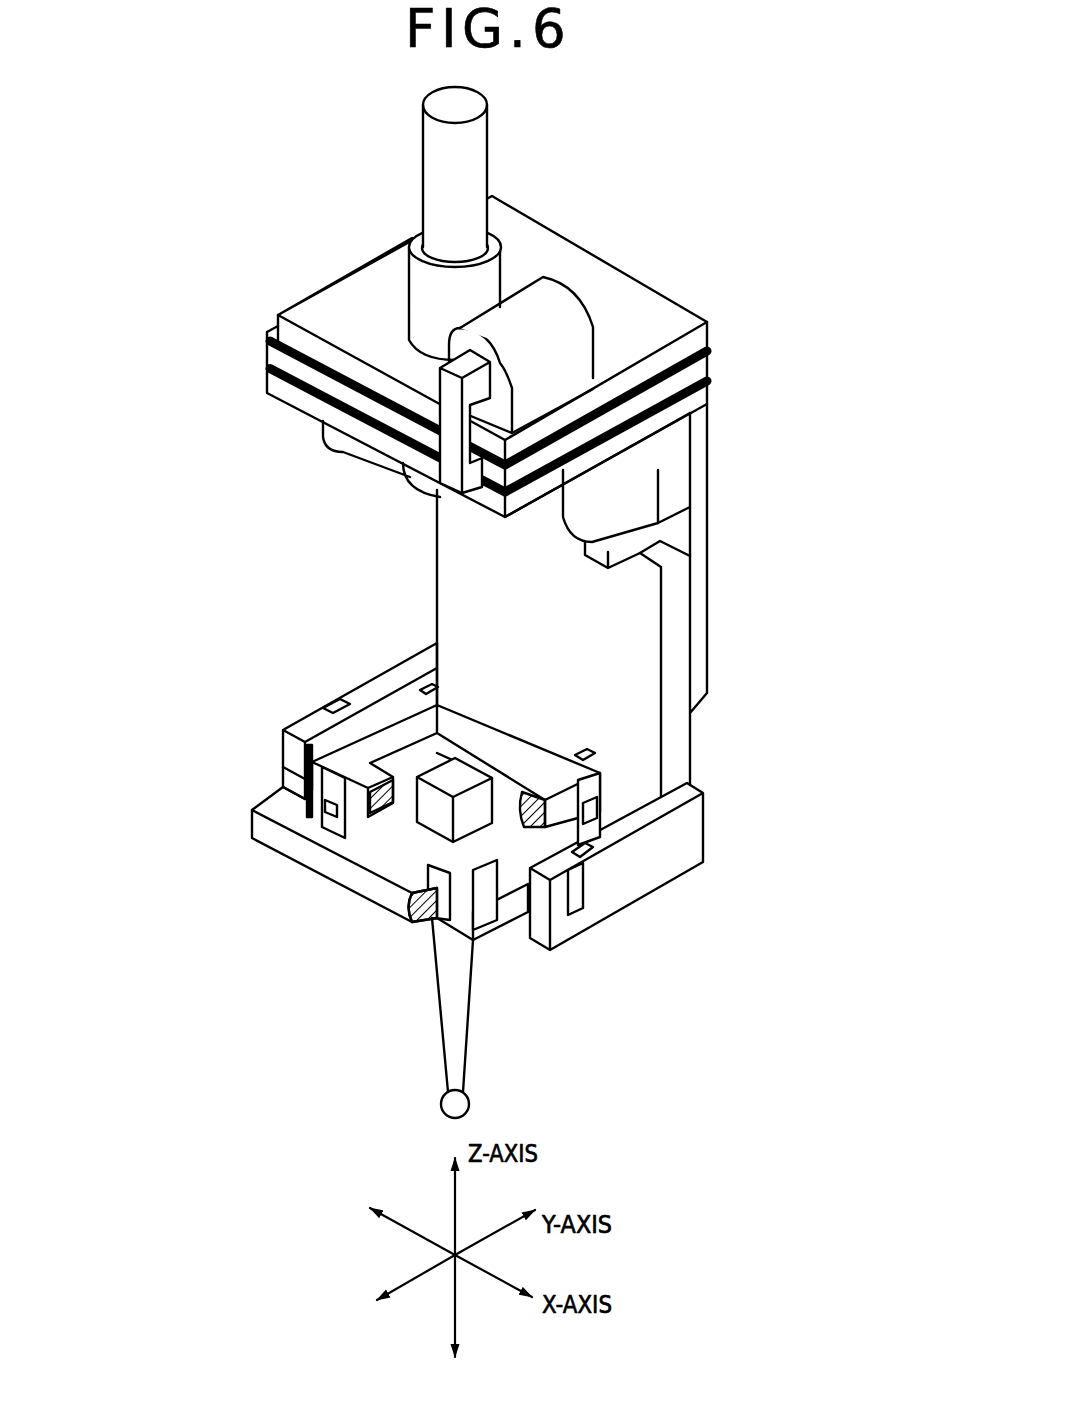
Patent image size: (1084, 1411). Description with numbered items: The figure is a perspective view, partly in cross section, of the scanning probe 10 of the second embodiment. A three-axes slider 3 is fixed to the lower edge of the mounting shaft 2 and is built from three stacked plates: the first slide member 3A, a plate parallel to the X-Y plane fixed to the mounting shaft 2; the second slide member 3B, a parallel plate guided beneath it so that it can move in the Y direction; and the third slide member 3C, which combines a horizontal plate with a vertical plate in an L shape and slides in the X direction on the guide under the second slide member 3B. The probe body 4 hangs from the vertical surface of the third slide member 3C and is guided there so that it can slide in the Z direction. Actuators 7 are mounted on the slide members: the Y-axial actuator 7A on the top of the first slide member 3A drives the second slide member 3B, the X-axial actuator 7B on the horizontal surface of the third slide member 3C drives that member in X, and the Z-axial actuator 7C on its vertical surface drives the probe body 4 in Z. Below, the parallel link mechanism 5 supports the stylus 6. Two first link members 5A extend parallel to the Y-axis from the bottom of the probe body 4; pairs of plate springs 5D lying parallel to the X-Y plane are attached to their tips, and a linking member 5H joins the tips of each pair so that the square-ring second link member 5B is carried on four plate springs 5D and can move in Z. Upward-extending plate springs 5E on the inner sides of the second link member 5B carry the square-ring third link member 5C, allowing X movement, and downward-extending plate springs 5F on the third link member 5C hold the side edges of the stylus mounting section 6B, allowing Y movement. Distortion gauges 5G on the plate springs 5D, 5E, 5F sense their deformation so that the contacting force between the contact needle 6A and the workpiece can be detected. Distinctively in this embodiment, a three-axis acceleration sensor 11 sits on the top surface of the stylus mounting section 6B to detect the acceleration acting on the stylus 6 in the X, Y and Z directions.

The mounting shaft 2 is at (470, 148).
The three-axes slider 3 is at (556, 490).
The first slide member 3A is at (672, 316).
The second slide member 3B is at (697, 372).
The third slide member 3C is at (534, 555).
The probe body 4 is at (675, 734).
The parallel link mechanism 5 is at (474, 813).
The first link member 5A is at (373, 685).
The second link member 5B is at (277, 843).
The third link member 5C is at (548, 743).
The plate spring 5D is at (303, 727).
The plate spring 5E is at (427, 685).
The plate spring 5F is at (328, 788).
The distortion gauge 5G is at (337, 710).
The linking member 5H is at (292, 775).
The stylus 6 is at (359, 980).
The contact needle 6A is at (447, 1065).
The stylus mounting section 6B is at (383, 843).
The actuator 7 is at (535, 392).
The Y-axial actuator 7A is at (560, 292).
The X-axial actuator 7B is at (343, 448).
The Z-axial actuator 7C is at (670, 494).
The scanning probe 10 is at (714, 247).
The acceleration sensor 11 is at (458, 773).